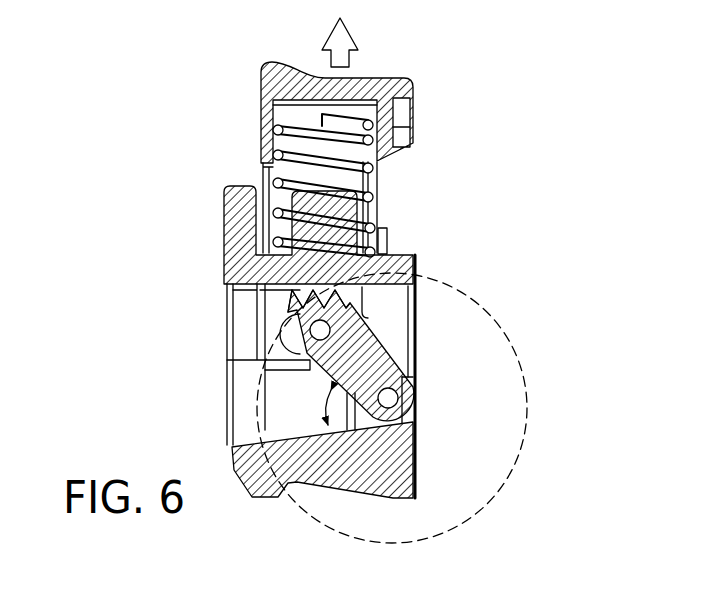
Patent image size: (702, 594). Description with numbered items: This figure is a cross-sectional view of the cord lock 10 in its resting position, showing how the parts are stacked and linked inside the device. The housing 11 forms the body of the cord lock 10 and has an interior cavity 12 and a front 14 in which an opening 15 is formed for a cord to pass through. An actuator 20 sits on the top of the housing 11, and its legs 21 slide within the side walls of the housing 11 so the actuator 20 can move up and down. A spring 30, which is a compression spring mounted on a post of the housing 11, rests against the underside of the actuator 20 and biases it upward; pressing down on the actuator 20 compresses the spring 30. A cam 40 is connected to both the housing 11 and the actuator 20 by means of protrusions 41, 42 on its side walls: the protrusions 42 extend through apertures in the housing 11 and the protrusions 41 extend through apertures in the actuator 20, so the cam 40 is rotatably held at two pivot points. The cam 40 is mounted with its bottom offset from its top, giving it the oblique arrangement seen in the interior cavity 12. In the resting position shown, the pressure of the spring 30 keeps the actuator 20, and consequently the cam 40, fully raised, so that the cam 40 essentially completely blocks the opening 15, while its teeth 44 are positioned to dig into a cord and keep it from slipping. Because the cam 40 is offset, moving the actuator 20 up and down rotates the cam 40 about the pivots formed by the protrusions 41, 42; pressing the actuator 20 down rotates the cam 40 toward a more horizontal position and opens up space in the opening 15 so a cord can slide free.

The cord lock 10 is at (500, 170).
The housing 11 is at (392, 456).
The interior cavity 12 is at (300, 403).
The front 14 is at (224, 249).
The opening 15 is at (243, 325).
The actuator 20 is at (432, 78).
The legs 21 is at (272, 302).
The spring 30 is at (368, 197).
The cam 40 is at (363, 357).
The protrusions 41 is at (317, 332).
The protrusions 42 is at (390, 400).
The teeth 44 is at (333, 293).